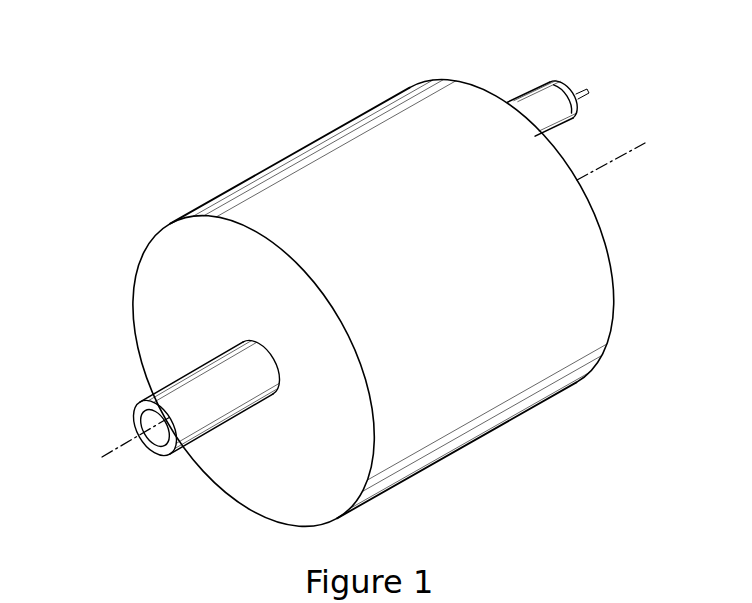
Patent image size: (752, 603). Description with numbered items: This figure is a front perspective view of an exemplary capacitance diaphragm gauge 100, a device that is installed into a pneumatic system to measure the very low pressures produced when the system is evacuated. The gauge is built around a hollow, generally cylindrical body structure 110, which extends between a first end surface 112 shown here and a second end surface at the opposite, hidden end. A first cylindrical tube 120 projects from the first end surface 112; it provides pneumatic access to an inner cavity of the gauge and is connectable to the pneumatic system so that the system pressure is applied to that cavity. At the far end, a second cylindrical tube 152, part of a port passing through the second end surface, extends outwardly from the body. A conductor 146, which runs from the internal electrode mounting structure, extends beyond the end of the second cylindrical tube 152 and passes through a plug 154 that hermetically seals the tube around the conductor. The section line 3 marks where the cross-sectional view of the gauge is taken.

The capacitance diaphragm gauge 100 is at (395, 294).
The cylindrical body structure 110 is at (320, 168).
The first end surface 112 is at (163, 278).
The first cylindrical tube 120 is at (155, 396).
The second cylindrical tube 152 is at (553, 100).
The conductor 146 is at (577, 93).
The plug 154 is at (575, 106).
The section line 3- 3 is at (665, 153).